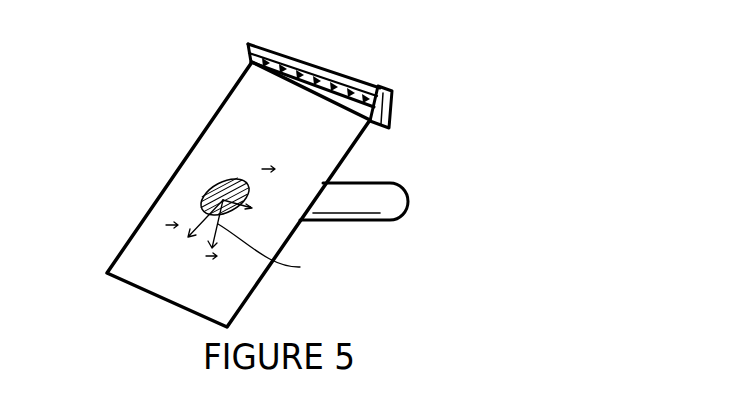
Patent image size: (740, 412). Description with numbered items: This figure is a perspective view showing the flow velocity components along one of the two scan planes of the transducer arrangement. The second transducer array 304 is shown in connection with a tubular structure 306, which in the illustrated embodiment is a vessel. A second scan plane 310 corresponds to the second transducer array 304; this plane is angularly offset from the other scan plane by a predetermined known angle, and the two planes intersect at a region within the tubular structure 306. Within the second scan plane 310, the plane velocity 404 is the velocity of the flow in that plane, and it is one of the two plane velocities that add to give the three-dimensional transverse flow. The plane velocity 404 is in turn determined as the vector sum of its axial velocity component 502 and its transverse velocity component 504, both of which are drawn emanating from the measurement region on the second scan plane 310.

The second transducer array 304 is at (383, 105).
The tubular structure 306 is at (407, 193).
The second scan plane 310 is at (305, 152).
The velocity V_A 404 is at (285, 251).
The axial velocity component V_AX 502 is at (223, 190).
The transverse velocity component V_AZ 504 is at (222, 208).